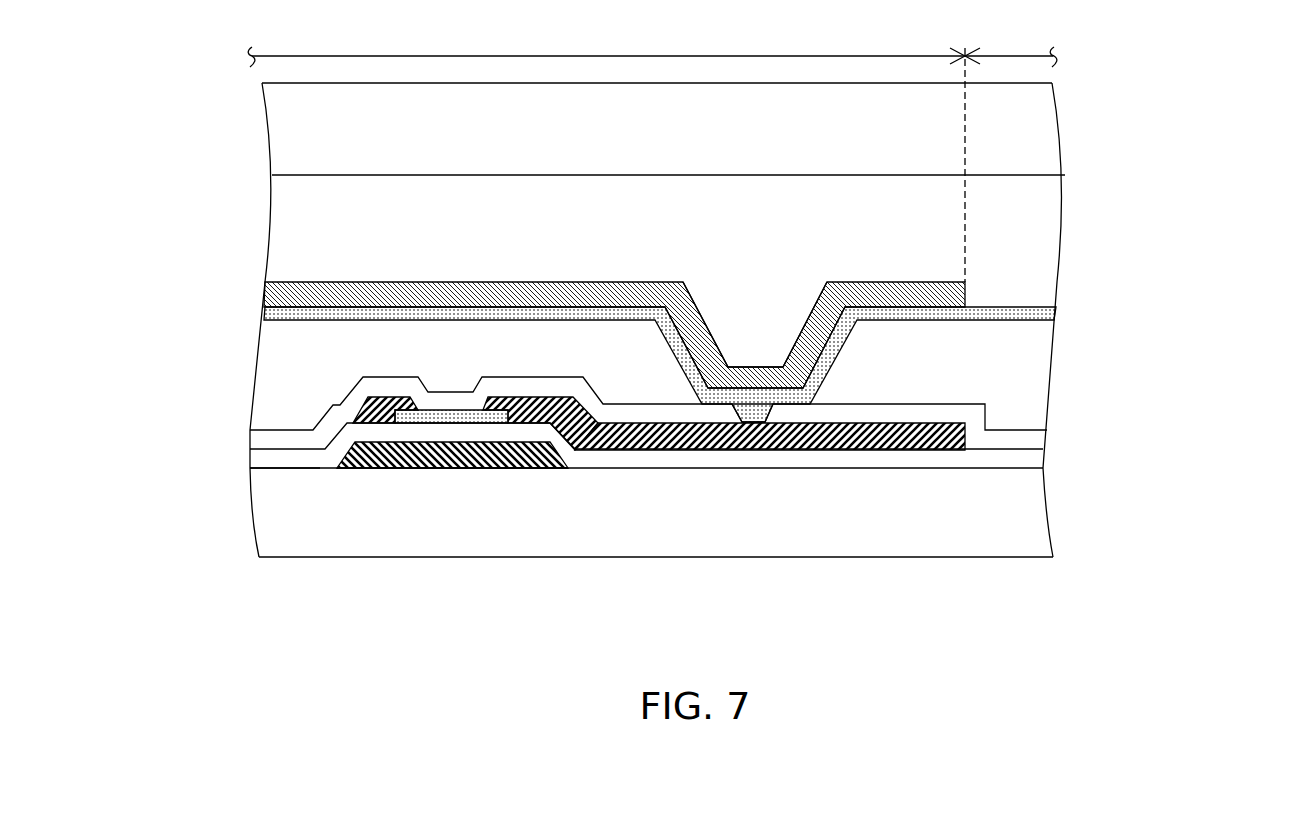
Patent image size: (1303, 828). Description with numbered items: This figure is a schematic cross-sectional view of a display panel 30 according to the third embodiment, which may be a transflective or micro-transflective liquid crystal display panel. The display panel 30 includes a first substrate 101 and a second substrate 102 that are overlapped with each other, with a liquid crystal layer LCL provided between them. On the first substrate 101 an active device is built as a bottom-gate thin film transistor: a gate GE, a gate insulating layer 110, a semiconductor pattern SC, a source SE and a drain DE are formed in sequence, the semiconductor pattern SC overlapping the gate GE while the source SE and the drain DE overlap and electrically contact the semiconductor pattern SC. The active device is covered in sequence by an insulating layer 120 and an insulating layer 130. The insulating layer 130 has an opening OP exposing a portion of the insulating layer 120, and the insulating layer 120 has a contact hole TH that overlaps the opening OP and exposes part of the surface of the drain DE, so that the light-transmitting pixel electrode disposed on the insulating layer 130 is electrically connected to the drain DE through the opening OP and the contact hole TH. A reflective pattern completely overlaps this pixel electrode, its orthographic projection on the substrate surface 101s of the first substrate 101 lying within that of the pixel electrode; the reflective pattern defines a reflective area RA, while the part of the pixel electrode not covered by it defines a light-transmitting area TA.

The second substrate 102 is at (1033, 134).
The liquid crystal layer LCL is at (1033, 206).
The insulating layer 130 is at (1012, 365).
The insulating layer 120 is at (1015, 435).
The gate insulating layer 110 is at (1015, 457).
The first substrate 101 is at (1015, 518).
The substrate surface 101s is at (285, 463).
The gate GE is at (435, 456).
The semiconductor pattern SC is at (462, 421).
The source SE is at (375, 408).
The drain DE is at (545, 413).
The opening OP is at (685, 350).
The contact hole TH is at (763, 409).
The reflective area RA is at (614, 44).
The light-transmitting area TA is at (1011, 151).
The display panel 30 is at (1140, 629).